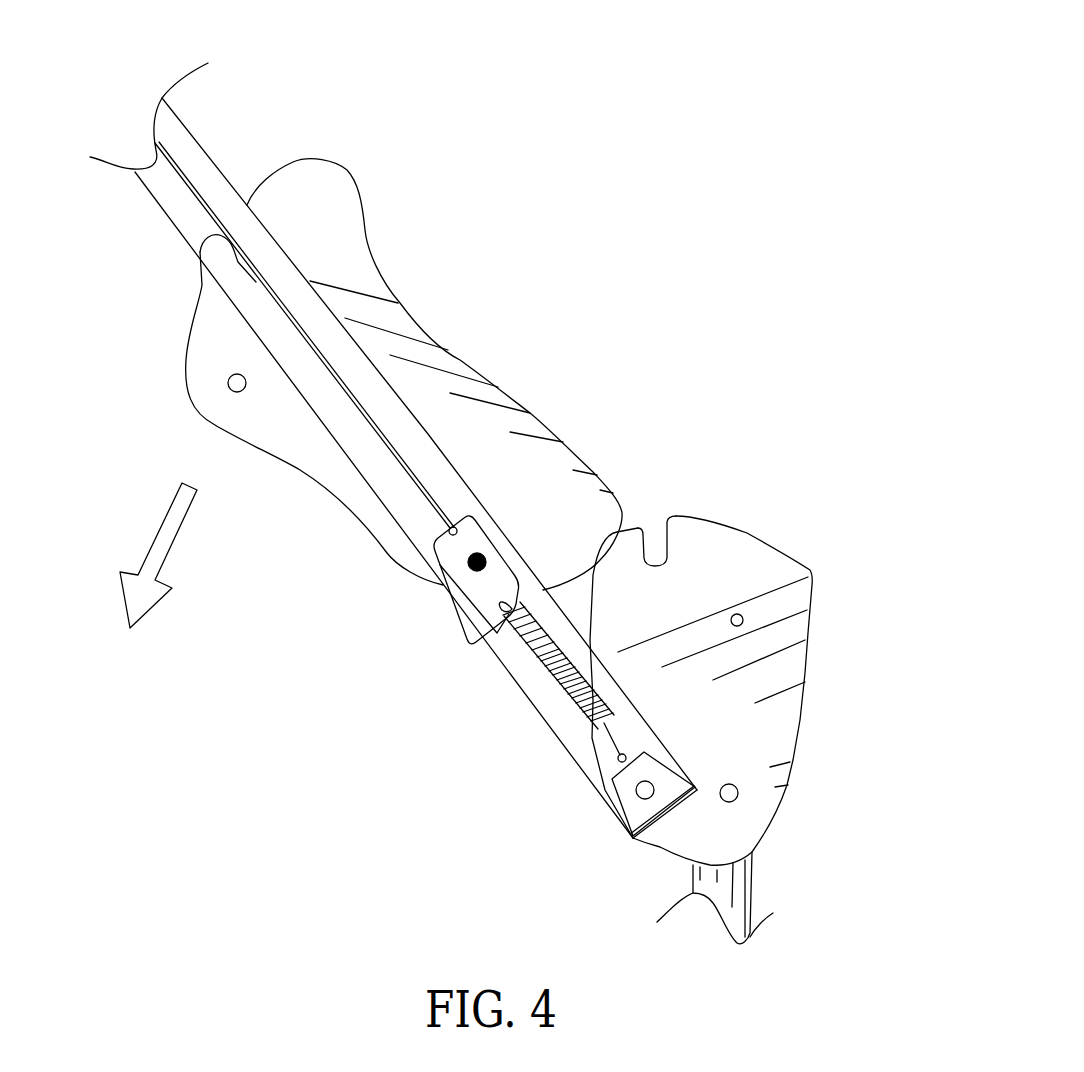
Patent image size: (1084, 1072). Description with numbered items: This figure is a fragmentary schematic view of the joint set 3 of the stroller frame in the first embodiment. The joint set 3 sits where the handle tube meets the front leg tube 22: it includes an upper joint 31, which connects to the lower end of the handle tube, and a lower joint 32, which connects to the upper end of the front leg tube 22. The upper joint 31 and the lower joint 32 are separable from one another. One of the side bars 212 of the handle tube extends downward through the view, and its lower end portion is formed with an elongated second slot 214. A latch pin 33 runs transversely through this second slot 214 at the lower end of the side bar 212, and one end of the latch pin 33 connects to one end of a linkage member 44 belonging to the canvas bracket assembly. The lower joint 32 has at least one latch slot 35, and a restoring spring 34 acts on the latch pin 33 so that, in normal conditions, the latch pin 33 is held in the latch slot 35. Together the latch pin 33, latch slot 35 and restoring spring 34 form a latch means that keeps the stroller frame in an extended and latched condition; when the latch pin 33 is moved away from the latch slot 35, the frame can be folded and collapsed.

The joint set 3 is at (607, 325).
The side bar 212 is at (185, 148).
The second slot 214 is at (500, 600).
The front leg tube 22 is at (740, 903).
The upper joint 31 is at (345, 256).
The lower joint 32 is at (750, 737).
The latch pin 33 is at (468, 562).
The restoring spring 34 is at (588, 735).
The latch slot 35 is at (655, 522).
The linkage member 44 is at (203, 277).